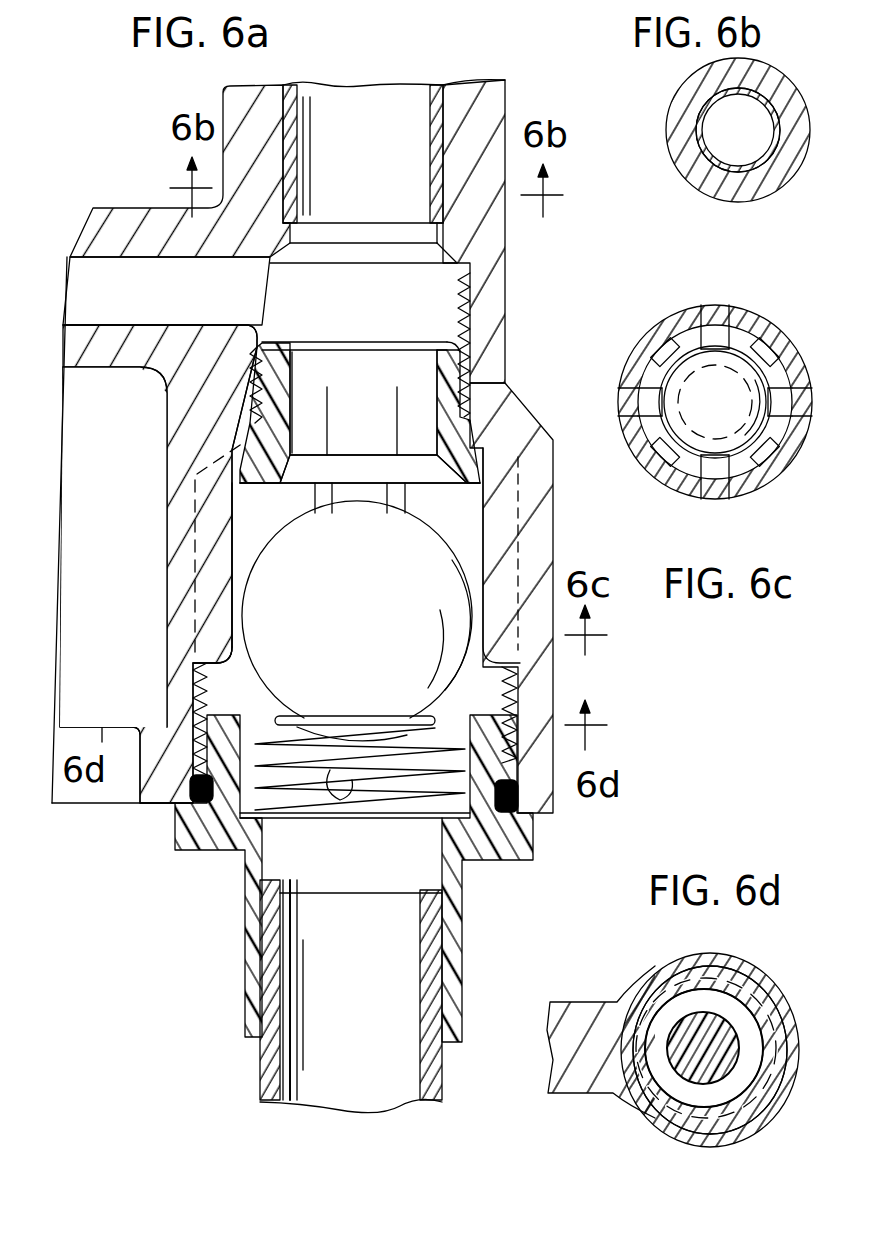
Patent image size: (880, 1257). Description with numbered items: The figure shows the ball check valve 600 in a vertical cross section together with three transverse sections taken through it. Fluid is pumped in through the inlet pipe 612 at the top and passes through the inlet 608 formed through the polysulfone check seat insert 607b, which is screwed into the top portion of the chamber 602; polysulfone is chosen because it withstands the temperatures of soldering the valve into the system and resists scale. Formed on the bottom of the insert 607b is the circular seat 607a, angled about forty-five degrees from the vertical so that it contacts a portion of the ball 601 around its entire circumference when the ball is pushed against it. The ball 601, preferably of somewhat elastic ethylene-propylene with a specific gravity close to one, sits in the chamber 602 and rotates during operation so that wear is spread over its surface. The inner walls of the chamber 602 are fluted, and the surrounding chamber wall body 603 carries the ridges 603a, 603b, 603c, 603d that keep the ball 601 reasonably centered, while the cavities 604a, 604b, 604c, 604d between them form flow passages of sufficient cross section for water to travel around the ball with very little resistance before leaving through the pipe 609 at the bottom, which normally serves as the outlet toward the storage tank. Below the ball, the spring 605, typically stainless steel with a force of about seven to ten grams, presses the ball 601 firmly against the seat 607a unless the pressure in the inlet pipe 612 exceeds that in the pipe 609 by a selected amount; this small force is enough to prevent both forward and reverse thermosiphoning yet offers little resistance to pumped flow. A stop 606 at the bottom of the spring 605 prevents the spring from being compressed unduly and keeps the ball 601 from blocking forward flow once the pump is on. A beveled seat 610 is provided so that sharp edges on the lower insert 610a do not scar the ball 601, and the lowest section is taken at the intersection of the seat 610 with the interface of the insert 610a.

In FIG. 6A, the check valve 600 is at (522, 310).
In FIG. 6A, the ball 601 is at (372, 613).
In FIG. 6C, the ball 601 is at (735, 416).
In FIG. 6D, the ball 601 is at (713, 1060).
In FIG. 6A, the chamber 602 is at (483, 530).
In FIG. 6A, the ball holder body 603 is at (548, 640).
In FIG. 6C, the ball holder body 603 is at (640, 355).
In FIG. 6A, the ridge 603a is at (217, 557).
In FIG. 6C, the ridge 603a is at (790, 445).
In FIG. 6C, the ridge 603b is at (722, 310).
In FIG. 6C, the ridge 603c is at (638, 398).
In FIG. 6C, the ridge 603d is at (710, 478).
In FIG. 6C, the cavity 604a is at (757, 348).
In FIG. 6C, the cavity 604b is at (663, 352).
In FIG. 6C, the cavity 604c is at (648, 443).
In FIG. 6C, the cavity 604d is at (757, 462).
In FIG. 6A, the spring 605 is at (248, 825).
In FIG. 6A, the stop 606 is at (328, 770).
In FIG. 6A, the seat 607a is at (487, 507).
In FIG. 6A, the check seat insert 607b is at (470, 397).
In FIG. 6A, the inlet 608 is at (330, 403).
In FIG. 6C, the inlet 608 is at (660, 455).
In FIG. 6A, the pipe 609 is at (320, 976).
In FIG. 6A, the beveled seat 610 is at (440, 712).
In FIG. 6D, the beveled seat 610 is at (683, 1113).
In FIG. 6A, the insert 610a is at (267, 712).
In FIG. 6A, the inlet pipe 612 is at (405, 105).
In FIG. 6B, the inlet pipe 612 is at (718, 120).